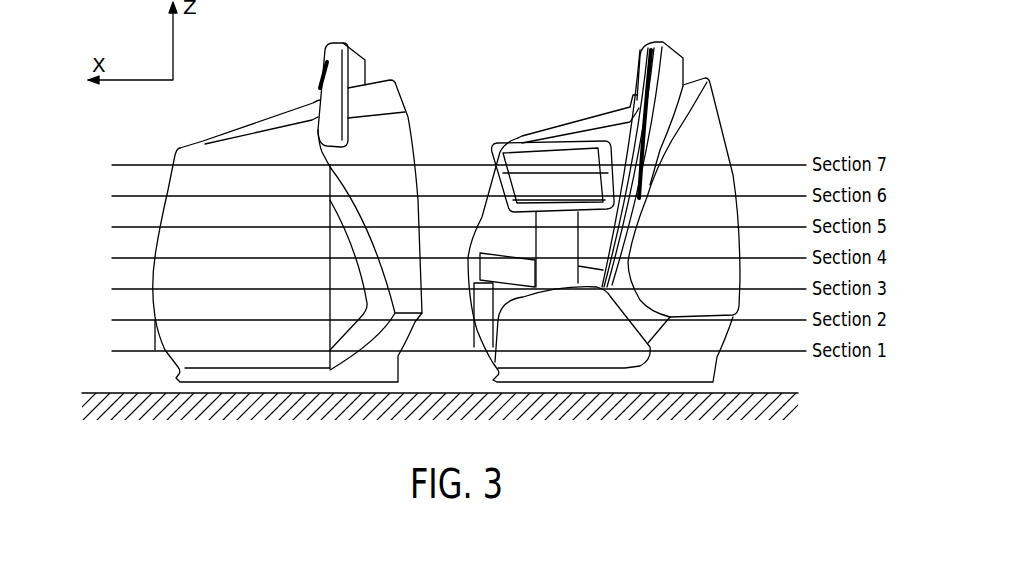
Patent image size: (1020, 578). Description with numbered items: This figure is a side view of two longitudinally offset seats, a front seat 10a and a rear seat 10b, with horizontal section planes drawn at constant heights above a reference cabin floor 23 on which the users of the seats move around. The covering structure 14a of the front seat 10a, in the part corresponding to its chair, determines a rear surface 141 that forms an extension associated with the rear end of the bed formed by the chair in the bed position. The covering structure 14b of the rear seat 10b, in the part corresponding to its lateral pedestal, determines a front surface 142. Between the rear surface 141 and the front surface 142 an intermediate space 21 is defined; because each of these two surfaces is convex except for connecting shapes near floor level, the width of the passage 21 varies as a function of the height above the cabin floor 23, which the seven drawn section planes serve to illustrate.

The front seat 10a is at (251, 211).
The rear seat 10b is at (632, 194).
The covering structure of the front seat 14a is at (326, 205).
The covering structure of the rear seat 14b is at (611, 161).
The rear surface 141 is at (415, 152).
The front surface 142 is at (472, 167).
The intermediate space 21 is at (463, 220).
The cabin floor 23 is at (762, 395).